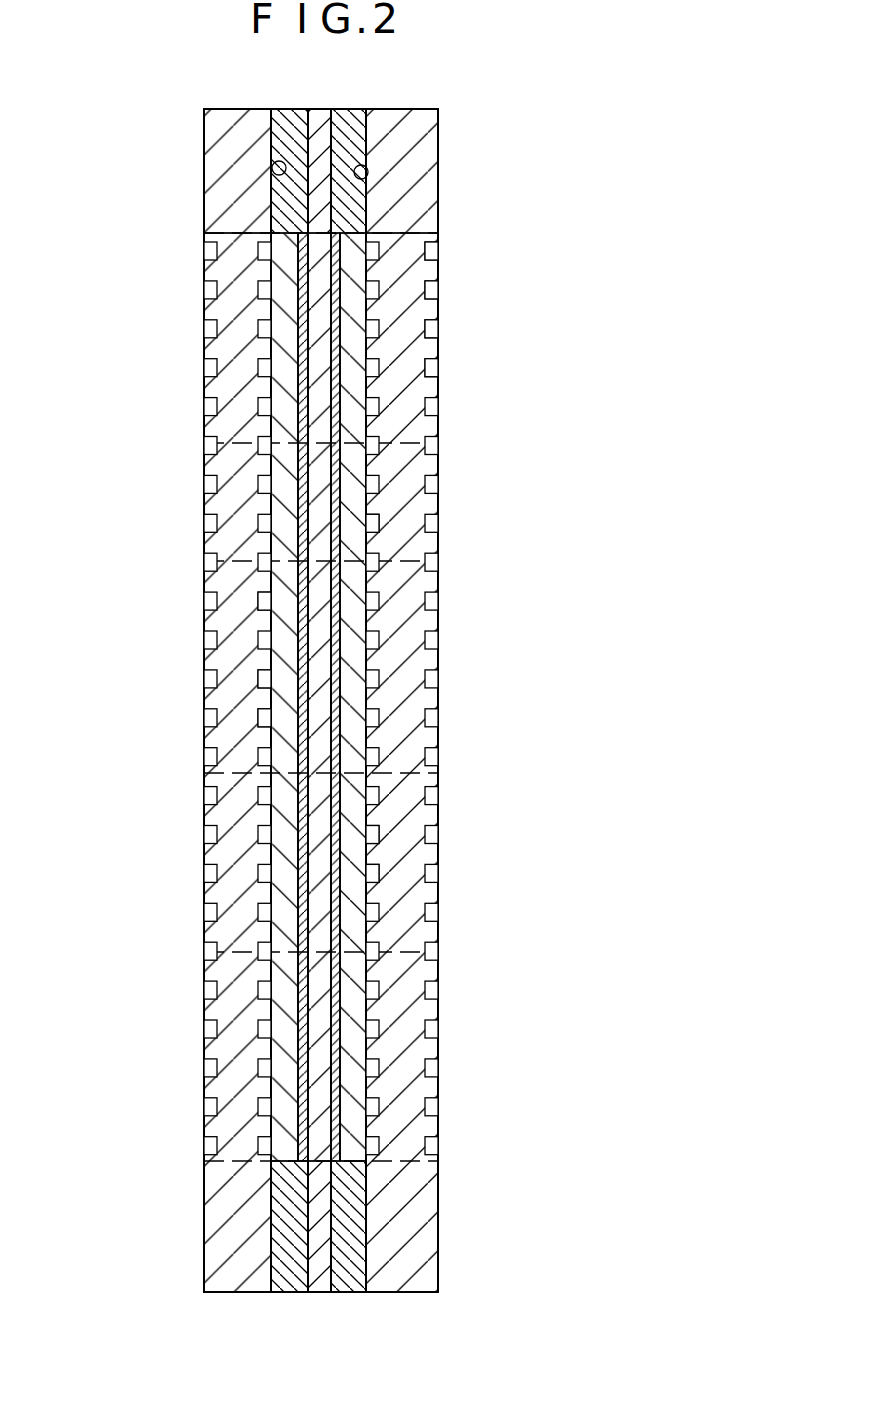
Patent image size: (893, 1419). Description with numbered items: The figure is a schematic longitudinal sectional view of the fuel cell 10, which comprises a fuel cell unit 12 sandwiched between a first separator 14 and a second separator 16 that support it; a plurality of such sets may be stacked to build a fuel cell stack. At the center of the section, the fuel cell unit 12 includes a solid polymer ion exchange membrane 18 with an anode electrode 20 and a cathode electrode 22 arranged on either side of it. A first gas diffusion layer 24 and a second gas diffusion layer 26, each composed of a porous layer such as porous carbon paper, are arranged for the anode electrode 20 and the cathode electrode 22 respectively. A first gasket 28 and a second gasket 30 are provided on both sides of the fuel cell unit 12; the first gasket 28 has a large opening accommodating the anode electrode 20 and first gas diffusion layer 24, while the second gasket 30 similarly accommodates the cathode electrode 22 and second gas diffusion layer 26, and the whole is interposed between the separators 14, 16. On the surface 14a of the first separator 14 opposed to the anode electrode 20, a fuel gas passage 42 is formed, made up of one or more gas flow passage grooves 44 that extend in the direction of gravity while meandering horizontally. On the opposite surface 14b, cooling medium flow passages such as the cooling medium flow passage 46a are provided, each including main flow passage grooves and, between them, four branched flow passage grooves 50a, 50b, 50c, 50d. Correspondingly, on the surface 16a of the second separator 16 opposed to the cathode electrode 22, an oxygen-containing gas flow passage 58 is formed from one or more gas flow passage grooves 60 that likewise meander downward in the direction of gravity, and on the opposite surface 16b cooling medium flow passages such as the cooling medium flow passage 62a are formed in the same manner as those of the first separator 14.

The fuel cell 10 is at (498, 50).
The fuel cell unit 12 is at (318, 104).
The first separator 14 is at (441, 162).
The surface of the first separator 14a is at (366, 166).
The surface of the first separator 14b is at (438, 198).
The second separator 16 is at (199, 168).
The surface of the second separator 16a is at (283, 162).
The surface of the second separator 16b is at (203, 208).
The solid polymer ion exchange membrane 18 is at (322, 1288).
The anode electrode 20 is at (340, 1087).
The cathode electrode 22 is at (300, 1120).
The first gas diffusion layer 24 is at (350, 1138).
The second gas diffusion layer 26 is at (280, 1088).
The first gasket 28 is at (352, 1297).
The second gasket 30 is at (278, 1296).
The fuel gas passage 42 is at (384, 516).
The gas flow passage groove 44 is at (374, 876).
The cooling medium flow passage 46a is at (457, 327).
The branched flow passage groove 50a is at (430, 253).
The branched flow passage groove 50b is at (430, 291).
The branched flow passage groove 50c is at (430, 331).
The branched flow passage groove 50d is at (430, 368).
The oxygen-containing gas flow passage 58 is at (256, 600).
The gas flow passage groove 60 is at (258, 722).
The cooling medium flow passage 62a is at (186, 475).